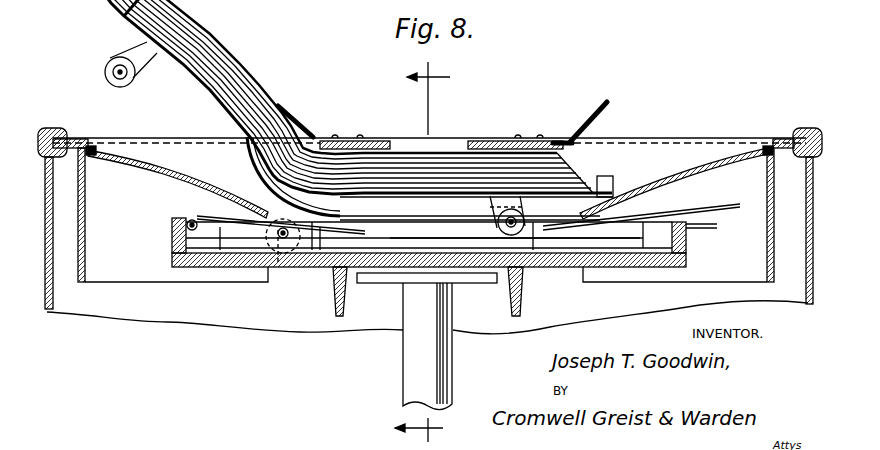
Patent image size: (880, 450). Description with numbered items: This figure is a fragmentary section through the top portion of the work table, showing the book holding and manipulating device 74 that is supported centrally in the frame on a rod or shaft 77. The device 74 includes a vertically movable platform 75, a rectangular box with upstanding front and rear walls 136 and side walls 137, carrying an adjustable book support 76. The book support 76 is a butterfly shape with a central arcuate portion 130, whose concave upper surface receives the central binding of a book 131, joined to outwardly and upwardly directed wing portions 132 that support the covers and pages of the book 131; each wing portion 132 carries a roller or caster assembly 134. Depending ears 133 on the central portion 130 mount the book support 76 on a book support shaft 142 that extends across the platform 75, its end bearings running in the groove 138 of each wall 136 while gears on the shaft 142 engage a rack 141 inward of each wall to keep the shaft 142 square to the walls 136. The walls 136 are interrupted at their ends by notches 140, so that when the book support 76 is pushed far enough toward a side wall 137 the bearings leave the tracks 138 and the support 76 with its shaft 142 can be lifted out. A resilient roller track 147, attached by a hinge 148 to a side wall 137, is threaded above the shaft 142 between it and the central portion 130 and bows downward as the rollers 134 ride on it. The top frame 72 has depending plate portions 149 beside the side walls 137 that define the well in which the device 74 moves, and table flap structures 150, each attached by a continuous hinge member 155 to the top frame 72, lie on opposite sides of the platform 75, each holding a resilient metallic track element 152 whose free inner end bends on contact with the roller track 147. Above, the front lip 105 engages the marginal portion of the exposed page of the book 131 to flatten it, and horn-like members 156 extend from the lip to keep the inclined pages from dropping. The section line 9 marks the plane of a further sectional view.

The section line 9- 9 is at (431, 252).
The top frame 72 is at (783, 138).
The book holding and manipulating device 74 is at (656, 114).
The platform 75 is at (575, 268).
The book support 76 is at (616, 186).
The rod or shaft 77 is at (447, 352).
The front lip 105 is at (490, 138).
The central arcuate portion 130 is at (248, 152).
The book 131 is at (223, 98).
The wing portions 132 is at (450, 190).
The depending ears 133 is at (278, 265).
The roller or caster assembly 134 is at (510, 210).
The front and rear walls 136 is at (355, 223).
The side walls 137 is at (688, 243).
The groove 138 is at (398, 255).
The notches 140 is at (661, 232).
The rack 141 is at (214, 226).
The book support shaft 142 is at (258, 255).
The roller track 147 is at (392, 268).
The hinge 148 is at (189, 219).
The depending plate portions 149 is at (769, 230).
The table flap structures 150 is at (676, 176).
The resilient metallic track element 152 is at (533, 250).
The continuous hinge member 155 is at (766, 142).
The horn-like members 156 is at (608, 103).